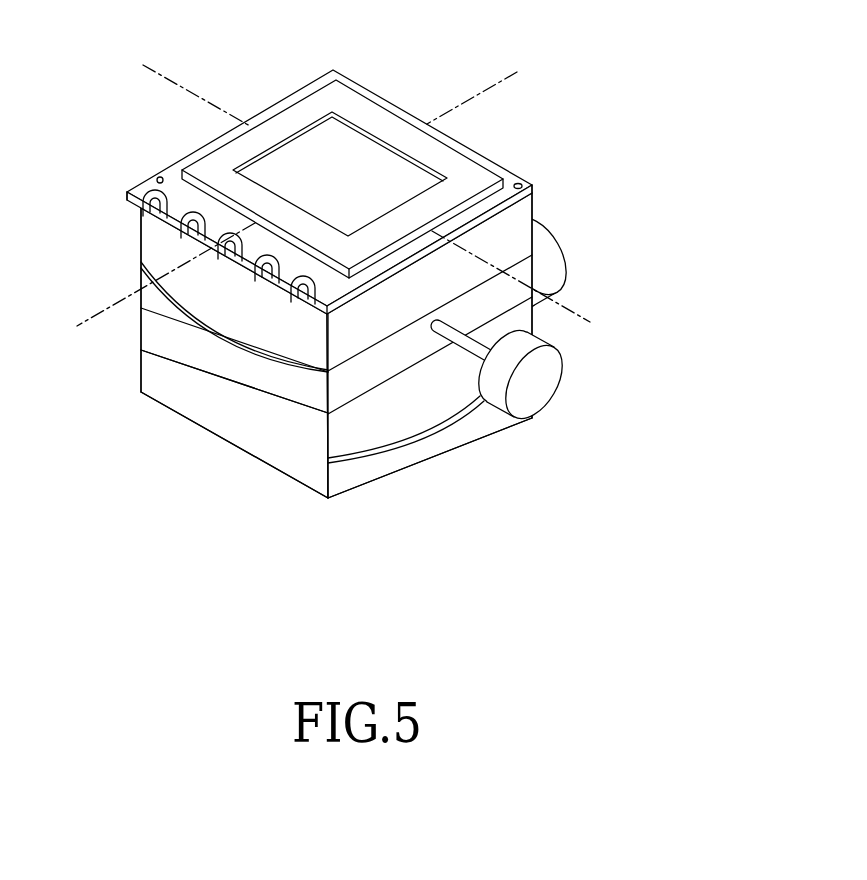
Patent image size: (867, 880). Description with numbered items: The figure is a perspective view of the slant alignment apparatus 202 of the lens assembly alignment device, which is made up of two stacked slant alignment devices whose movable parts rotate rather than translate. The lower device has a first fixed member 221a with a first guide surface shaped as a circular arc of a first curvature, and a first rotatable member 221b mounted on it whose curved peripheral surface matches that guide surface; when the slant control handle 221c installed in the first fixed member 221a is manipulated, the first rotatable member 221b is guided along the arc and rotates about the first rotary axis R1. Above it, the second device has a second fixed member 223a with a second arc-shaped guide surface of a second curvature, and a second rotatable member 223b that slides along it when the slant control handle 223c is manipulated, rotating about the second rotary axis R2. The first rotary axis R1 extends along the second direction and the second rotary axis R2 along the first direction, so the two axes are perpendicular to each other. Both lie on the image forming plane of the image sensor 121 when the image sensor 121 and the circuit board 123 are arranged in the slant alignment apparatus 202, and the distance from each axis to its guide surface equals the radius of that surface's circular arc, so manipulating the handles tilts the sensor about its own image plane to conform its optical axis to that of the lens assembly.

The slant alignment apparatus 202 is at (357, 287).
The image sensor 121 is at (349, 143).
The circuit board 123 is at (503, 183).
The first fixed member 221a is at (353, 470).
The first rotatable member 221b is at (413, 419).
The slant control handle 221c is at (548, 245).
The second fixed member 223a is at (300, 381).
The second rotatable member 223b is at (234, 316).
The slant control handle 223c is at (542, 392).
The first rotary axis R1 is at (494, 82).
The second rotary axis R2 is at (195, 95).